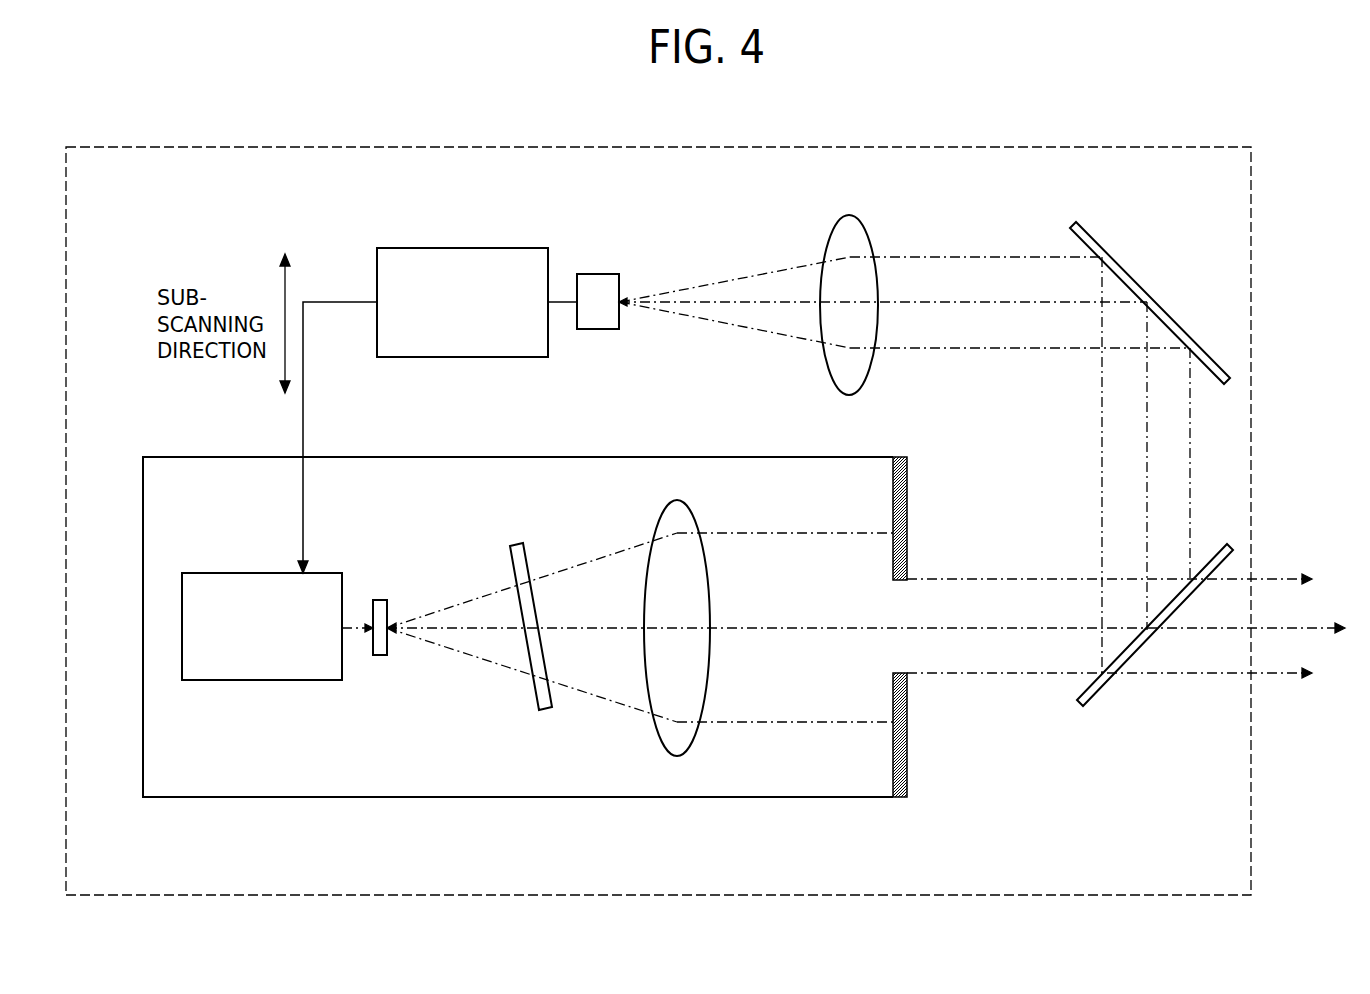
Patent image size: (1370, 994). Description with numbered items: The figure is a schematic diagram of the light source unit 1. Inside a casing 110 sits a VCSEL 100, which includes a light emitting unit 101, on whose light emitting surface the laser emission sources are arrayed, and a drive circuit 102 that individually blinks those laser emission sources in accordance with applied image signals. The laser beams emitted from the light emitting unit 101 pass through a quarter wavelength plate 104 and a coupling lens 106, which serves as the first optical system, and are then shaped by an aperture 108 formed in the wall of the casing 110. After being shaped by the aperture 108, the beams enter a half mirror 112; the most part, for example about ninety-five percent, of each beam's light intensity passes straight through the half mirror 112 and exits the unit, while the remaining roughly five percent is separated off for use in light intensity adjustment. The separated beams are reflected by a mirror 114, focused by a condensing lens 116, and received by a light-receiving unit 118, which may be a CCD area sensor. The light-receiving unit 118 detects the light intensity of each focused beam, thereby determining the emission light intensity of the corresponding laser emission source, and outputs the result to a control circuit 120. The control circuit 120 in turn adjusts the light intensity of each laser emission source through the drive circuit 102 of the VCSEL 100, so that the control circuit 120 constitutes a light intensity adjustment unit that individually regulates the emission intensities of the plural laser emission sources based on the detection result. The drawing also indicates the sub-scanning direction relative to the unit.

The light source unit 1 is at (1075, 136).
The VCSEL 100 is at (420, 690).
The light emitting unit 101 is at (382, 656).
The drive circuit 102 is at (325, 681).
The quarter wavelength plate 104 is at (527, 552).
The coupling lens 106 is at (699, 520).
The aperture 108 is at (908, 756).
The casing 110 is at (688, 456).
The half mirror 112 is at (1088, 706).
The mirror 114 is at (1132, 272).
The condensing lens 116 is at (870, 236).
The light-receiving unit 118 is at (601, 274).
The control circuit 120 is at (510, 247).